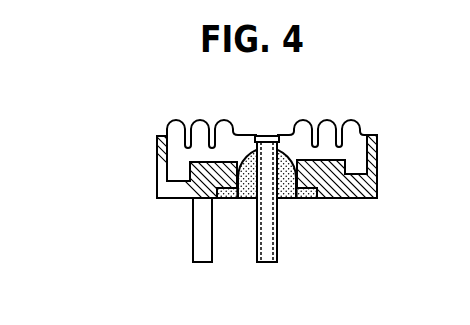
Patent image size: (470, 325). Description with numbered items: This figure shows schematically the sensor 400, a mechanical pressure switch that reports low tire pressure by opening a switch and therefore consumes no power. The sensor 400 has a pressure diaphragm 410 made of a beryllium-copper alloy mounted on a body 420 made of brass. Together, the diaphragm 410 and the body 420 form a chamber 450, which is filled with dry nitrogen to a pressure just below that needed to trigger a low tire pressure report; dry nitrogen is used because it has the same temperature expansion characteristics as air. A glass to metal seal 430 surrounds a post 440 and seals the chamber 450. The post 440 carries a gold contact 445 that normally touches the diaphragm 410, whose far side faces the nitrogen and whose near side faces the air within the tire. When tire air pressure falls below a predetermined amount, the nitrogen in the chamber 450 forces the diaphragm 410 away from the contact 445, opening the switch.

The sensor 400 is at (146, 226).
The pressure diaphragm 410 is at (168, 133).
The body 420 is at (372, 198).
The glass to metal seal 430 is at (299, 198).
The post 440 is at (277, 243).
The gold contact 445 is at (268, 136).
The chamber 450 is at (236, 148).